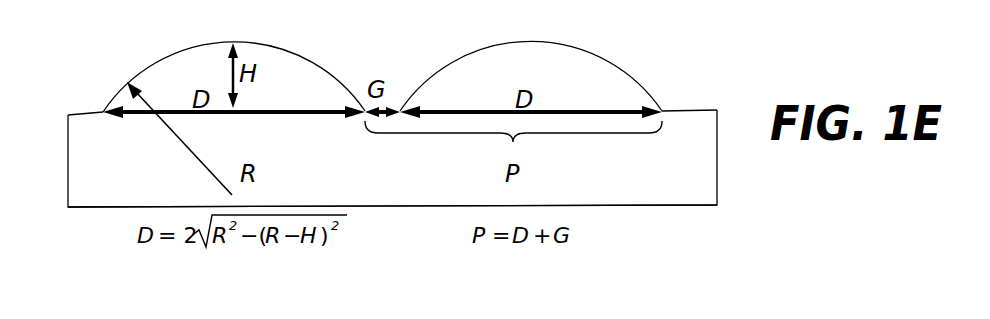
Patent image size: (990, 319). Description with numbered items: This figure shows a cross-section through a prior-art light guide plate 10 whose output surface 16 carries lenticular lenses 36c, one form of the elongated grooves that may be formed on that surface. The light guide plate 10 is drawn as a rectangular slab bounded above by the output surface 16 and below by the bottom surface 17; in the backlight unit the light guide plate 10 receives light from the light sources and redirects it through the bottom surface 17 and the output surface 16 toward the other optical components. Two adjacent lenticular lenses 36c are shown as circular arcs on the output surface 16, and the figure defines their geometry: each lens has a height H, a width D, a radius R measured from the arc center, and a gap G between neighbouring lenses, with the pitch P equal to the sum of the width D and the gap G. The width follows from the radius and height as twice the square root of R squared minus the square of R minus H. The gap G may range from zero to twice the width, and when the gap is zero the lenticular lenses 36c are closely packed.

The light guide plate 10 is at (392, 158).
The output surface 16 is at (688, 110).
The bottom surface 17 is at (638, 207).
The lenticular lenses 36c is at (617, 70).